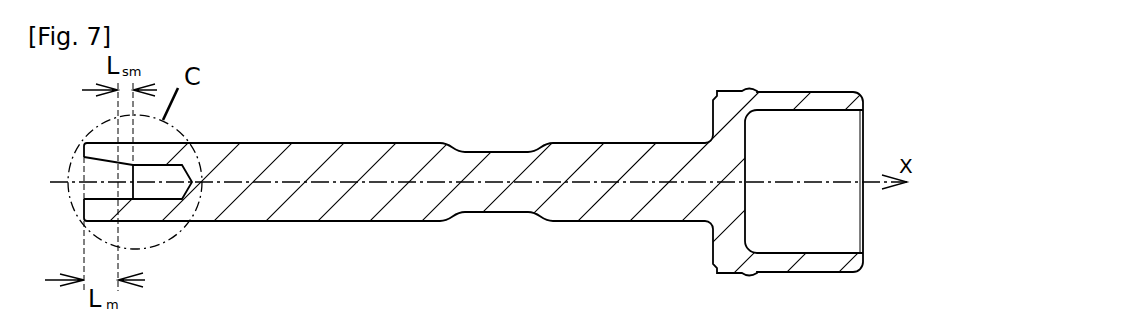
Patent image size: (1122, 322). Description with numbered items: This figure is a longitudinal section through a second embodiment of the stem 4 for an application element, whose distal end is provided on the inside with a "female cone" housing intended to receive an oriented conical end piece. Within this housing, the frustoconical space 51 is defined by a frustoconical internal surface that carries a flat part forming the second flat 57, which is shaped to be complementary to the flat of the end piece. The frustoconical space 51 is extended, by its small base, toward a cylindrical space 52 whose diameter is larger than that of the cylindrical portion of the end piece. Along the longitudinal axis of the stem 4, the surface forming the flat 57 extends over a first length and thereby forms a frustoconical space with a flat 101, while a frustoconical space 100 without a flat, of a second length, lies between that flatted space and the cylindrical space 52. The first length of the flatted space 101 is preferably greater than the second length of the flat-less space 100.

The stem 4 is at (245, 160).
The frustoconical space 51 is at (100, 158).
The cylindrical space 52 is at (167, 173).
The second flat 57 is at (103, 200).
The frustoconical space without a flat 100 is at (134, 187).
The frustoconical space with a flat 101 is at (92, 192).